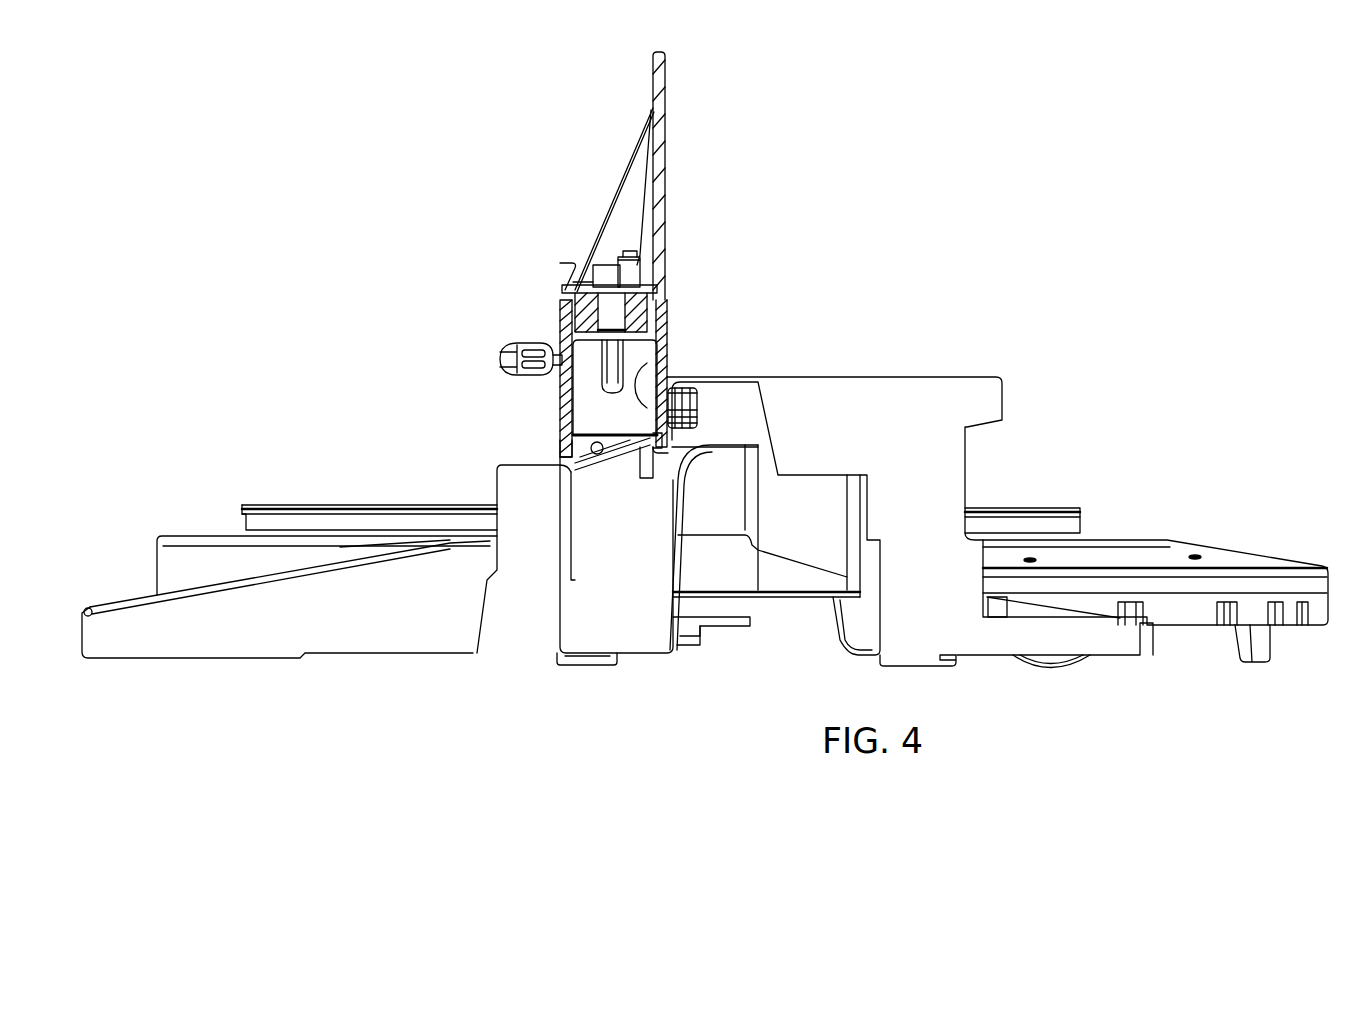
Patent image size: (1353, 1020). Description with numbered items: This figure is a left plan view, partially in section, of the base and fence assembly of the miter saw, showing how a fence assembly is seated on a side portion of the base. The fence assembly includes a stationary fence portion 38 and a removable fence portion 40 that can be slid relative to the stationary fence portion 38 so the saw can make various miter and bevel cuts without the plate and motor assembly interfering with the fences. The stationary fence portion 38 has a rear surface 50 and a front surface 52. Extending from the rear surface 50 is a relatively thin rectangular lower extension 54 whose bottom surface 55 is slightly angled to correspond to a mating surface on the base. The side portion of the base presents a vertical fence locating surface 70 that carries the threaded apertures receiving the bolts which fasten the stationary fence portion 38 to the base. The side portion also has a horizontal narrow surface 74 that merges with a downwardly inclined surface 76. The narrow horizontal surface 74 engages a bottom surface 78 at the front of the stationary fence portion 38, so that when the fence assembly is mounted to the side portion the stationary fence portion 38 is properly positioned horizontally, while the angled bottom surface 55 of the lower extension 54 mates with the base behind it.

The stationary fence portion 38 is at (656, 330).
The removable fence portion 40 is at (655, 228).
The rear surface 50 is at (560, 380).
The front surface 52 is at (662, 348).
The rectangular lower extension 54 is at (563, 446).
The bottom surface 55 is at (570, 467).
The vertical fence locating surface 70 is at (660, 366).
The horizontal narrow surface 74 is at (625, 430).
The downwardly inclined surface 76 is at (594, 456).
The bottom surface 78 is at (664, 456).